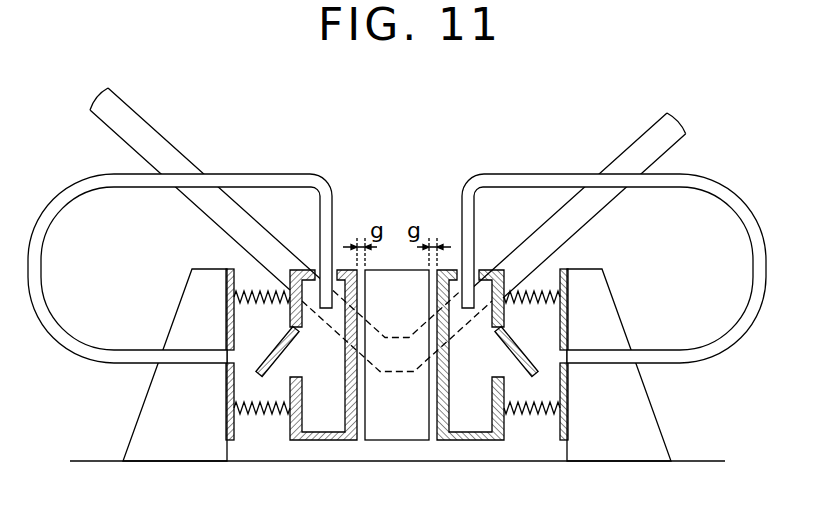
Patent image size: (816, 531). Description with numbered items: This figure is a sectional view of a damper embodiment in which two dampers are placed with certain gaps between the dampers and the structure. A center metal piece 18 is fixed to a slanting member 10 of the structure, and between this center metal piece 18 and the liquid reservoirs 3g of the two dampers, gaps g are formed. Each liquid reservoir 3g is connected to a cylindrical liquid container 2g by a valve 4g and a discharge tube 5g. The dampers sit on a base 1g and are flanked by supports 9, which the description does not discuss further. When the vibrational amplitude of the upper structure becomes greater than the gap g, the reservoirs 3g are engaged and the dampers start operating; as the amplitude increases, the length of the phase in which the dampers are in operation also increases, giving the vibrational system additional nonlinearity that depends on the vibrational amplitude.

The slanting member 10 is at (177, 98).
The center metal piece 18 is at (410, 418).
The support 9 is at (192, 436).
The discharge tube 5g is at (52, 312).
The valve 4g is at (275, 346).
The liquid reservoir 3g is at (330, 442).
The cylindrical liquid container 2g is at (257, 415).
The base 1g is at (276, 464).